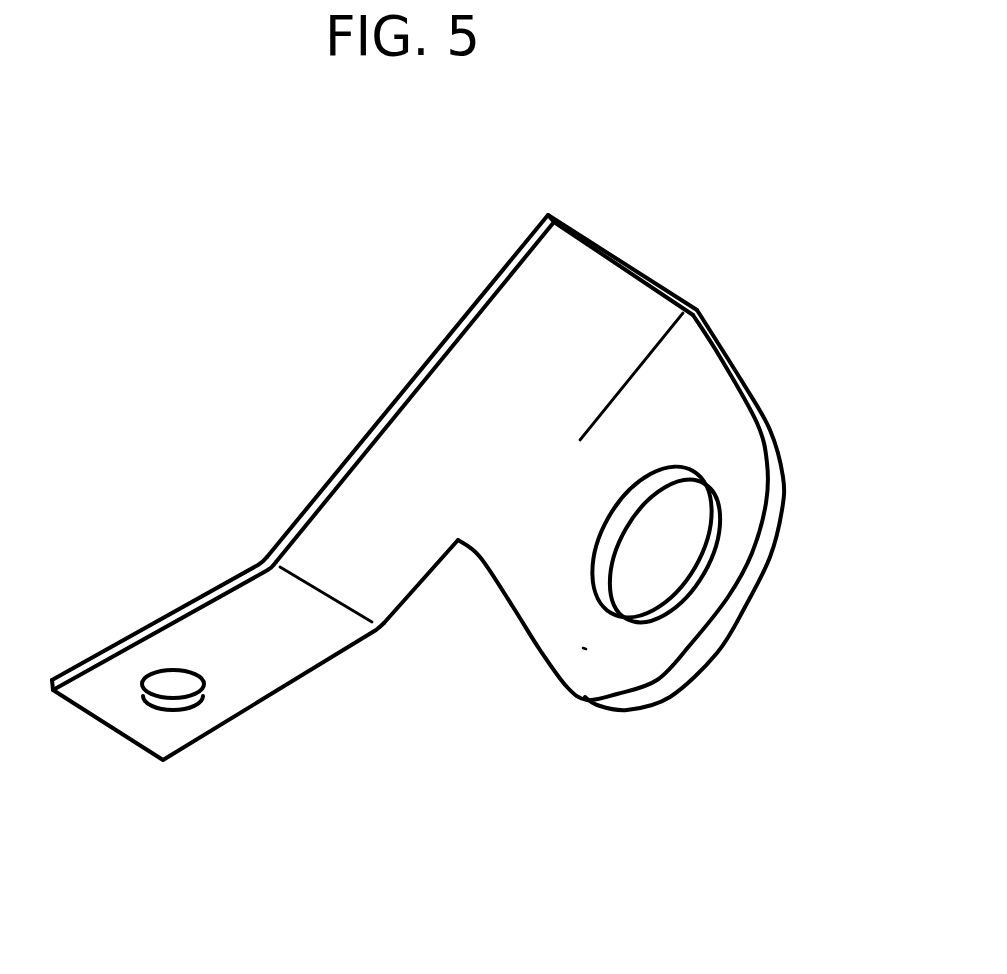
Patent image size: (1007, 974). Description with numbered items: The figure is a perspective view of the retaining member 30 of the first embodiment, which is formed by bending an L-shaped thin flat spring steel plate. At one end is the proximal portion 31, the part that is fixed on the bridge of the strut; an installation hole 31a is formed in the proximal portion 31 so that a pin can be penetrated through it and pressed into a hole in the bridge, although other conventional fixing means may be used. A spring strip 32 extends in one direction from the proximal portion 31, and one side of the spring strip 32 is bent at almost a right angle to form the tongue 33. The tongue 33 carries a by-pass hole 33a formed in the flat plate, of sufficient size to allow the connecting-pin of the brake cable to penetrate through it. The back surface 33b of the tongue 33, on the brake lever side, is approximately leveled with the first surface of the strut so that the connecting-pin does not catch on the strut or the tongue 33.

The retaining member 30 is at (627, 252).
The proximal portion 31 is at (133, 630).
The installation hole 31a is at (173, 700).
The spring strip 32 is at (405, 387).
The tongue 33 is at (783, 455).
The by-pass hole 33a is at (620, 523).
The back surface 33b is at (585, 648).